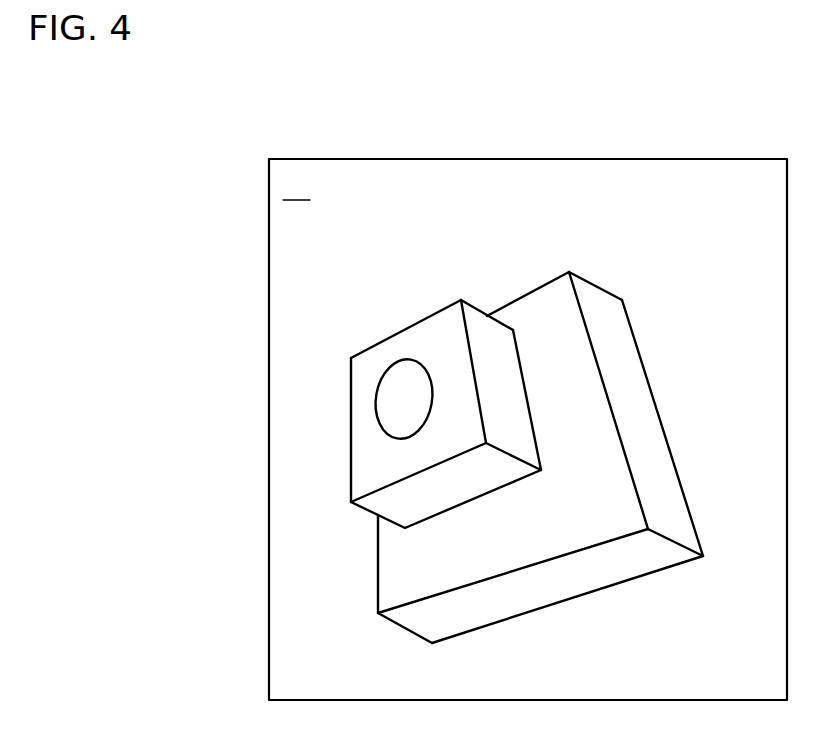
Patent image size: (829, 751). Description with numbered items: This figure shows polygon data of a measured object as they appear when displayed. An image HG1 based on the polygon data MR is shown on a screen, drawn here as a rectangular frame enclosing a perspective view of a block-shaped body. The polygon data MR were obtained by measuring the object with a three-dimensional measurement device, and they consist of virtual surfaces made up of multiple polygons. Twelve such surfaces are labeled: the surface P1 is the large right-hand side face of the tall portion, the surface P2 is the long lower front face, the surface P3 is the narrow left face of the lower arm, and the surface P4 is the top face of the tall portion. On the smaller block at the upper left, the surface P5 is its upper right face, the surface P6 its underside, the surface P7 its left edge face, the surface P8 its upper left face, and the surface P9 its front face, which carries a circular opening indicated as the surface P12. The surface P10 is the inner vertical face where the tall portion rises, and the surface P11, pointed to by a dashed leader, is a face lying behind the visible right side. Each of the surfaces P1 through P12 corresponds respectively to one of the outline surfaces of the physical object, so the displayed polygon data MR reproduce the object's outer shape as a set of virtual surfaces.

The image HG1 is at (733, 158).
The polygon data MR is at (296, 188).
The surface P1 is at (641, 414).
The surface P2 is at (557, 592).
The surface P3 is at (378, 578).
The surface P4 is at (538, 288).
The surface P5 is at (478, 330).
The surface P6 is at (377, 498).
The surface P7 is at (351, 437).
The surface P8 is at (363, 350).
The surface P9 is at (365, 380).
The surface P10 is at (562, 328).
The surface P11 is at (658, 480).
The surface P12 is at (403, 368).